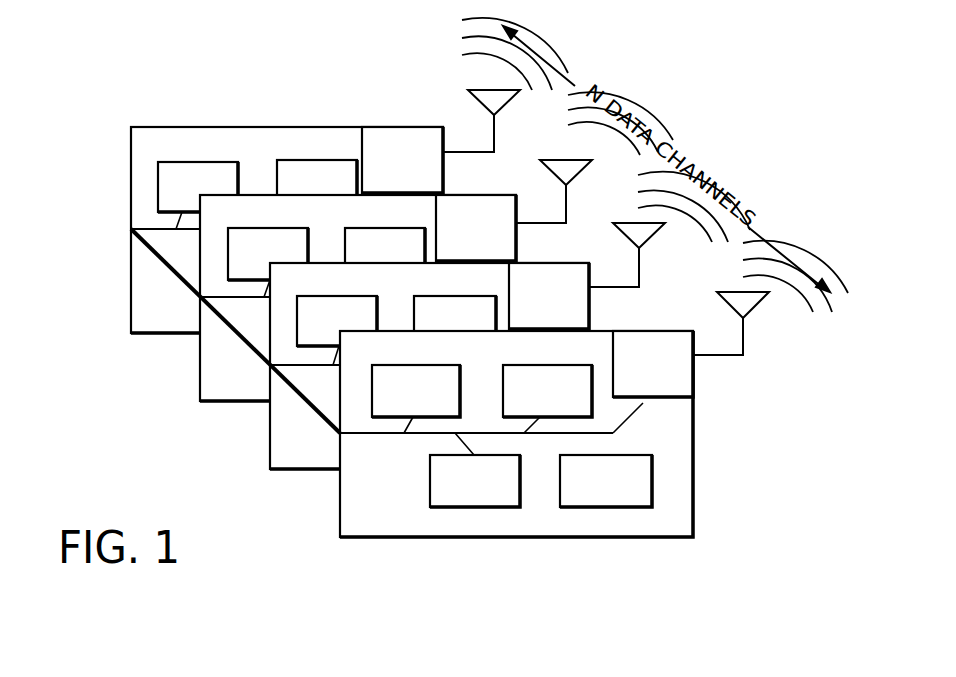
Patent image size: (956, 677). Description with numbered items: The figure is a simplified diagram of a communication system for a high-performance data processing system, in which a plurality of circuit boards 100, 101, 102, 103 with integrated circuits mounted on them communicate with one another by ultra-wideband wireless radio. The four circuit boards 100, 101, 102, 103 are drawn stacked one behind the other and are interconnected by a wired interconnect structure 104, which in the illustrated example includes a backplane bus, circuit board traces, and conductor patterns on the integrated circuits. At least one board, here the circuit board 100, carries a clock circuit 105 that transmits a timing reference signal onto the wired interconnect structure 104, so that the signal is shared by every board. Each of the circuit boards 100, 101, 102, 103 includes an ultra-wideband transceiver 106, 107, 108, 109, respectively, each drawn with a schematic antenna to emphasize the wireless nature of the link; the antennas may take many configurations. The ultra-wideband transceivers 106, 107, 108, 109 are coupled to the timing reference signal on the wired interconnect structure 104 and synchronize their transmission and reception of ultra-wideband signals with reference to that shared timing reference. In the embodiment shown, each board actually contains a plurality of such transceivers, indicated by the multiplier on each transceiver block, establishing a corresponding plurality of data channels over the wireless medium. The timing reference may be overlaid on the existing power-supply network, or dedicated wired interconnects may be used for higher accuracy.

The circuit board 100 is at (268, 207).
The circuit board 101 is at (340, 280).
The circuit board 102 is at (411, 346).
The circuit board 103 is at (498, 414).
The wired interconnect structure 104 is at (150, 251).
The clock circuit 105 is at (167, 172).
The ultra-wideband transceiver 106 is at (393, 128).
The ultra-wideband transceiver 107 is at (467, 195).
The ultra-wideband transceiver 108 is at (540, 263).
The ultra-wideband transceiver 109 is at (644, 331).